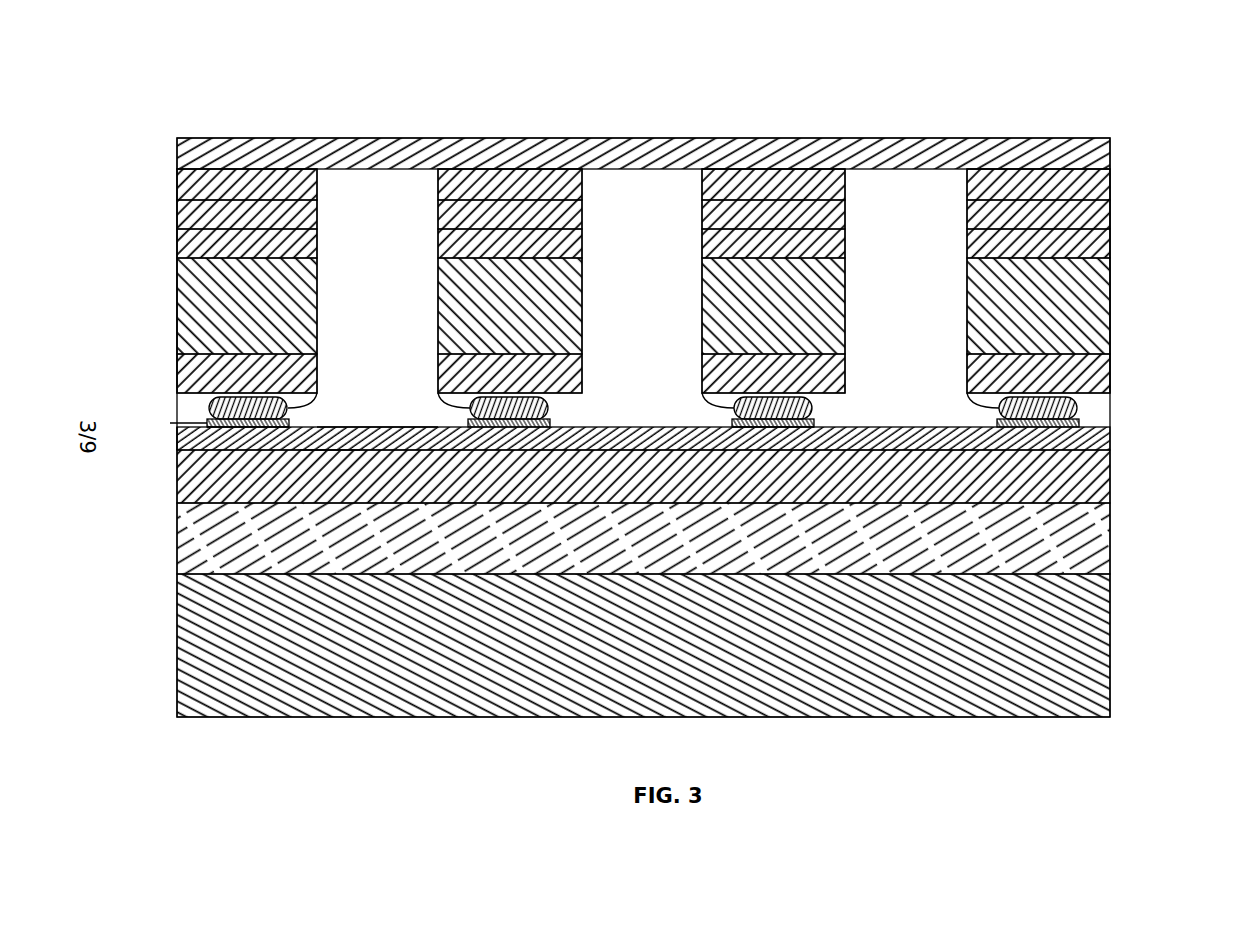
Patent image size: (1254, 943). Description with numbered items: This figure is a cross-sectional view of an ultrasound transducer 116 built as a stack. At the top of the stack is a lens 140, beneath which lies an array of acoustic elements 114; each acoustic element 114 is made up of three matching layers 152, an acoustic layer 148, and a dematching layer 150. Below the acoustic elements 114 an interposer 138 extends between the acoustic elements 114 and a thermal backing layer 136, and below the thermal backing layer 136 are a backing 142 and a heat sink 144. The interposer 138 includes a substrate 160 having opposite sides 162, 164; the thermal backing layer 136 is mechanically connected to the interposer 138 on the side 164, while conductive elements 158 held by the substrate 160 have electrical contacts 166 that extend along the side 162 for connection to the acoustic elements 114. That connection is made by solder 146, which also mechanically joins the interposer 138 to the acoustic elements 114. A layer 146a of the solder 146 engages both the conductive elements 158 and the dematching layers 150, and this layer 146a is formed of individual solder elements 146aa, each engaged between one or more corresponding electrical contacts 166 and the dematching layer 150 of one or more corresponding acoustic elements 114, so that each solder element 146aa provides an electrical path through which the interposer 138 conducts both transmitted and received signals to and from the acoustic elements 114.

The ultrasound transducer 116 is at (185, 95).
The lens 140 is at (1060, 137).
The acoustic elements 114 is at (165, 265).
The matching layers 152 is at (182, 185).
The acoustic layer 148 is at (180, 300).
The dematching layer 150 is at (188, 381).
The solder 146 is at (208, 406).
The layer of solder 146a is at (190, 409).
The individual solder elements 146aa is at (318, 398).
The electrical contacts 166 is at (178, 424).
The interposer 138 is at (1115, 438).
The thermal backing layer 136 is at (1115, 478).
The backing 142 is at (1115, 538).
The heat sink 144 is at (1115, 650).
The substrate 160 is at (177, 442).
The side of the substrate 162 is at (356, 425).
The conductive elements 158 is at (240, 432).
The side of the substrate 164 is at (328, 455).